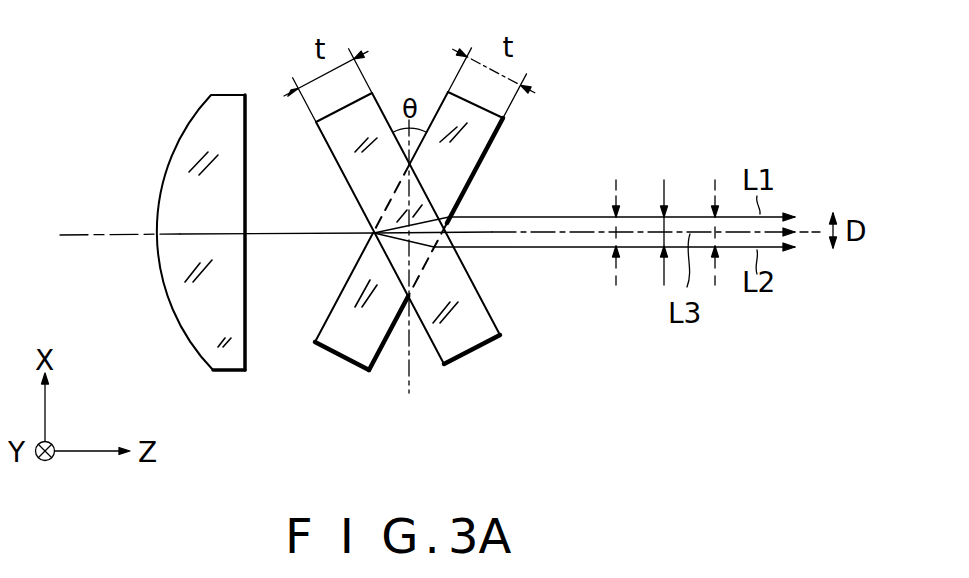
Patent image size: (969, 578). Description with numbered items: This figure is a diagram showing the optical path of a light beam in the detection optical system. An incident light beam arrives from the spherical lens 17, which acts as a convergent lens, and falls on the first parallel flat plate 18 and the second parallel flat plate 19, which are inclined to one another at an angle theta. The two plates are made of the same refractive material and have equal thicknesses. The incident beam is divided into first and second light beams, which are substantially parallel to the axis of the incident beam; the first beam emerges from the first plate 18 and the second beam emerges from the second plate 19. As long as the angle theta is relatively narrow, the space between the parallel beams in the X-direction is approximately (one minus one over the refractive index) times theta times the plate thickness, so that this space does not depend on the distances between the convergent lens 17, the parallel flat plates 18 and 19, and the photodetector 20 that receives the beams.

The spherical lens 17 is at (227, 95).
The first parallel flat plate 18 is at (480, 302).
The second parallel flat plate 19 is at (488, 134).
The photodetector 20 is at (665, 192).